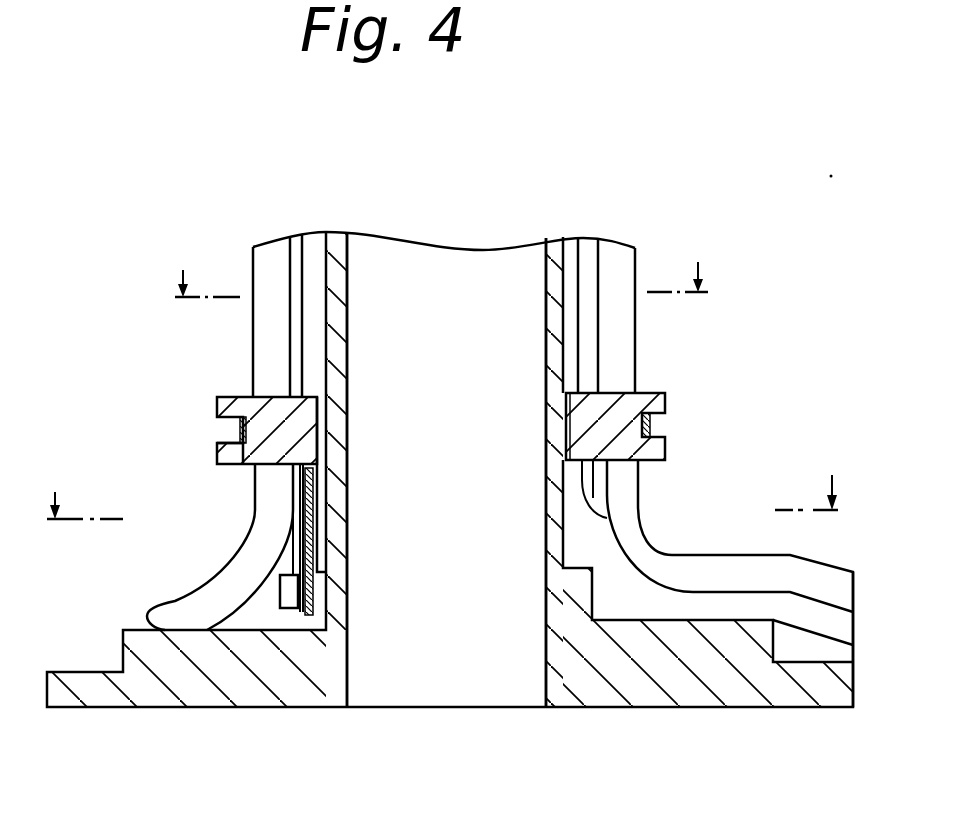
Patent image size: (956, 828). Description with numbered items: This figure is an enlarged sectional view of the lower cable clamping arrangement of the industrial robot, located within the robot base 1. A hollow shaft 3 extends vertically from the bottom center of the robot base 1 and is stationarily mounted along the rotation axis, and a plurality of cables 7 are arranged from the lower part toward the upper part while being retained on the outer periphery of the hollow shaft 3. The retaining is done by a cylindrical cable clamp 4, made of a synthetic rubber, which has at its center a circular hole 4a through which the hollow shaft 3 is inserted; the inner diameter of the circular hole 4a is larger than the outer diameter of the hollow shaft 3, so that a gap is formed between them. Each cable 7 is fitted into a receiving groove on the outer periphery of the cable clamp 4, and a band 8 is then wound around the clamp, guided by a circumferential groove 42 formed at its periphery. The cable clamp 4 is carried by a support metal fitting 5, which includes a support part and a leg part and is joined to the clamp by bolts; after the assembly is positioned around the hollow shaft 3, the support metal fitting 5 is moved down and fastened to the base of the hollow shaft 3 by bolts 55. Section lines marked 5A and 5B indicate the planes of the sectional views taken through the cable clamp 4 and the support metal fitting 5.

The robot base 1 is at (727, 680).
The hollow shaft 3 is at (337, 384).
The cable clamp 4 is at (654, 400).
The circular hole 4a is at (322, 418).
The circumferential groove 42 is at (222, 442).
The support metal fitting 5 is at (306, 517).
The bolts 55 is at (288, 597).
The cables 7 is at (618, 262).
The band 8 is at (240, 430).
The section line 5A is at (445, 265).
The section line 5B is at (442, 484).